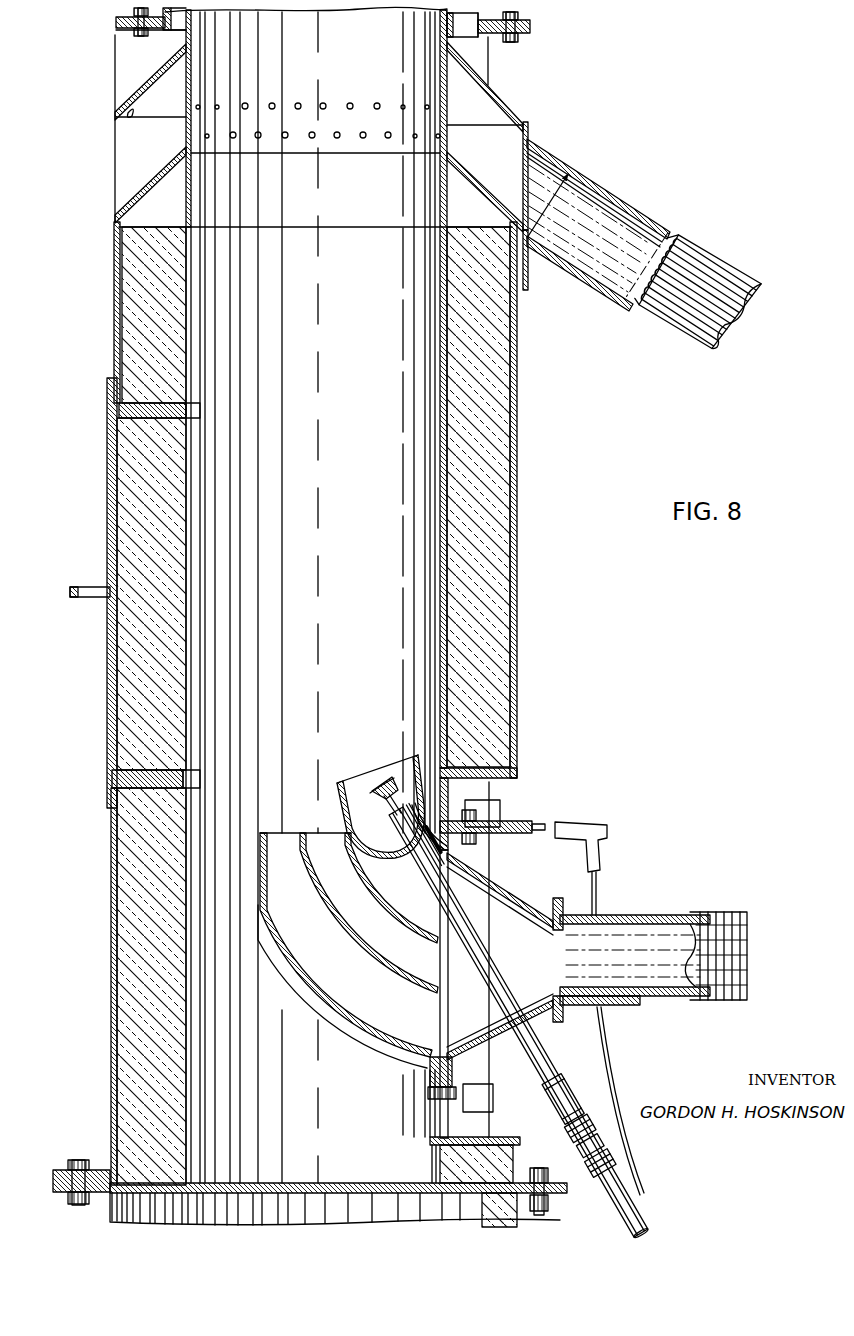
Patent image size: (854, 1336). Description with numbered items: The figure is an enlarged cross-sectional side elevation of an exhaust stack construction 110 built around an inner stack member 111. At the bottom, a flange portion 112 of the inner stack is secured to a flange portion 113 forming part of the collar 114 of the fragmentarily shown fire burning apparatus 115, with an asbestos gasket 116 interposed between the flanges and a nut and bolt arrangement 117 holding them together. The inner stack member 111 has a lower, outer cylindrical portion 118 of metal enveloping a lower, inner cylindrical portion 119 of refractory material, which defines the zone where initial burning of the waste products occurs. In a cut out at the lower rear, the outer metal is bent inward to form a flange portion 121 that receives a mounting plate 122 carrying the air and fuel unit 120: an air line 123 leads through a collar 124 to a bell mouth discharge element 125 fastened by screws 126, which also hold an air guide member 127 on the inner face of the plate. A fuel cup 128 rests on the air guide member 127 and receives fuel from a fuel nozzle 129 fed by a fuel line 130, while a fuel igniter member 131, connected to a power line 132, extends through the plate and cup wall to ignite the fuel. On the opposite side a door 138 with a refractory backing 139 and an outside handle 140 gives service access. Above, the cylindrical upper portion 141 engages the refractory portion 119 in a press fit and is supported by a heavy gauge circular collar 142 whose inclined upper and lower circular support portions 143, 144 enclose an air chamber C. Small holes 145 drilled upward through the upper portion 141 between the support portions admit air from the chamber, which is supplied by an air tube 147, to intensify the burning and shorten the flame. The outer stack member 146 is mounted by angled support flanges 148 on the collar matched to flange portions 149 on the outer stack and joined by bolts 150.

The exhaust stack construction 110 is at (520, 445).
The inner stack member 111 is at (515, 540).
The flange portion 112 is at (562, 1185).
The flange portion 113 is at (530, 1222).
The collar 114 is at (510, 1206).
The fire burning apparatus 115 is at (108, 1205).
The asbestos gasket 116 is at (550, 1208).
The nut and bolt arrangement 117 is at (538, 1169).
The lower, outer cylindrical portion 118 is at (113, 952).
The lower, inner cylindrical portion 119 is at (118, 838).
The air and fuel unit 120 is at (684, 913).
The flange portion 121 is at (493, 763).
The mounting plate 122 is at (506, 788).
The air line 123 is at (722, 921).
The collar 124 is at (625, 1006).
The bell mouth discharge element 125 is at (505, 890).
The screws 126 is at (428, 1092).
The air guide member 127 is at (293, 972).
The fuel cup 128 is at (340, 806).
The fuel nozzle 129 is at (390, 792).
The fuel line 130 is at (488, 972).
The fuel igniter member 131 is at (425, 842).
The power line 132 is at (585, 822).
The door 138 is at (110, 522).
The refractory backing 139 is at (182, 495).
The outside handle 140 is at (72, 588).
The cylindrical upper portion 141 is at (192, 76).
The circular collar 142 is at (527, 281).
The upper circular support portion 143 is at (128, 114).
The lower circular support portion 144 is at (485, 190).
The small holes 145 is at (376, 103).
The outer stack member 146 is at (490, 42).
The air tube 147 is at (694, 258).
The angled support flanges 148 is at (118, 30).
The flange portions 149 is at (528, 31).
The bolts 150 is at (128, 19).
The air chamber C is at (508, 150).